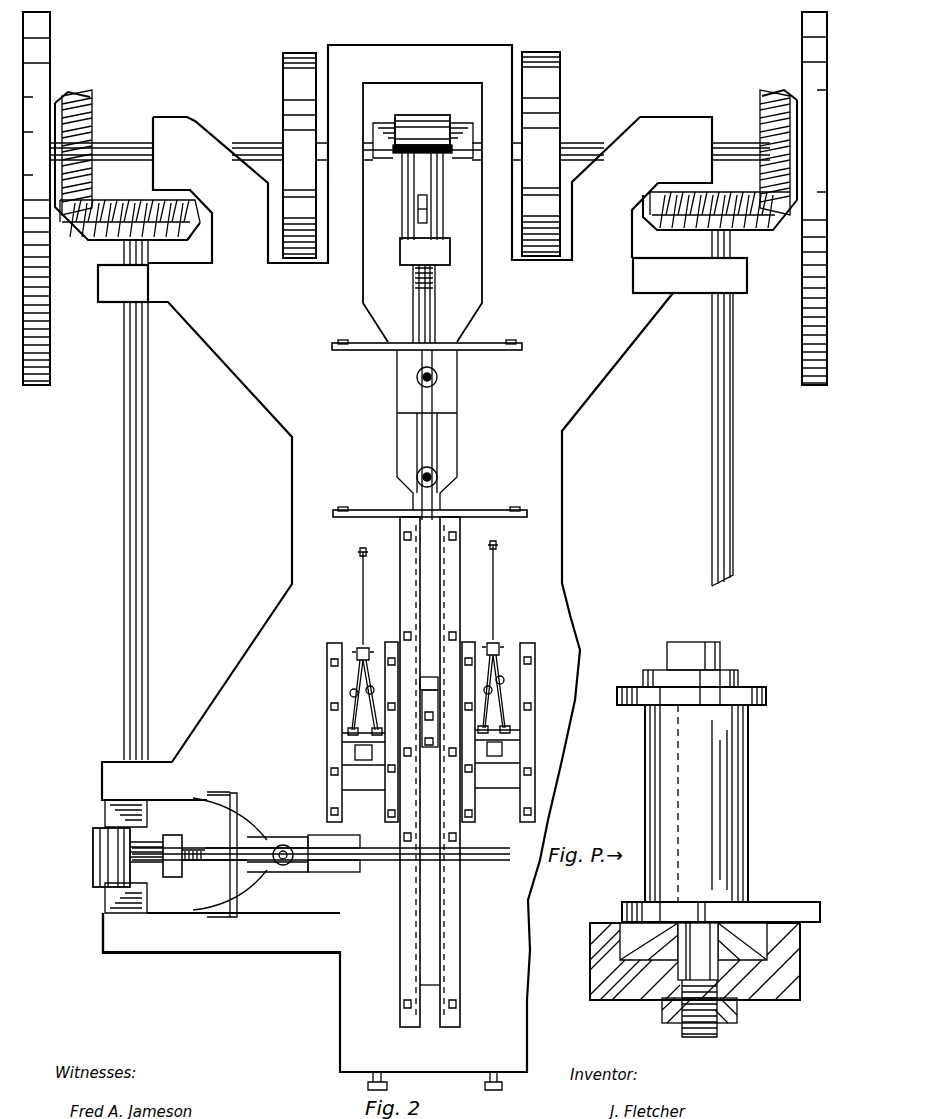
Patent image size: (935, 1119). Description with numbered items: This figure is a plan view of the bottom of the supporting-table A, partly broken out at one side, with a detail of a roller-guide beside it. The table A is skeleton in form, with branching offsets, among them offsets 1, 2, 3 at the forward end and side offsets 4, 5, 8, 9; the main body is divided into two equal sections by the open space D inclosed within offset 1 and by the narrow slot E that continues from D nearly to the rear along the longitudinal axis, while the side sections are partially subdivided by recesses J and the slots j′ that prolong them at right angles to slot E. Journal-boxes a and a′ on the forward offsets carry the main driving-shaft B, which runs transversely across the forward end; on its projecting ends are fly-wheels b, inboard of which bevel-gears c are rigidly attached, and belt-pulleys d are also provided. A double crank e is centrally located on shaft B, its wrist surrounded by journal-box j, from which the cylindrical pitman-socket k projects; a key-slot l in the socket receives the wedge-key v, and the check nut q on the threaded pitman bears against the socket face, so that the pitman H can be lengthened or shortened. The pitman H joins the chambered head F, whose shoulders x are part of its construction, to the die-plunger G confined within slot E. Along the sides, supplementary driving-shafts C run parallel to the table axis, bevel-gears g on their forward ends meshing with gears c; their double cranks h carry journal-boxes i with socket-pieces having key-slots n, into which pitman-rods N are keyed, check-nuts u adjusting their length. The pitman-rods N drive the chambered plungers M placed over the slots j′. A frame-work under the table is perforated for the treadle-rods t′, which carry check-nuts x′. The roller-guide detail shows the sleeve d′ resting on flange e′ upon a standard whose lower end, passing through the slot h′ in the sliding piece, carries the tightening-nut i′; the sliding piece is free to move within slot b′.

In FIG. 2, the supporting-table A is at (405, 558).
In FIG. 2, the offset 1 is at (420, 152).
In FIG. 2, the offset 2 is at (672, 183).
In FIG. 2, the offset 3 is at (184, 153).
In FIG. 2, the offset 4 is at (690, 275).
In FIG. 2, the offset 5 is at (123, 283).
In FIG. 2, the offset 8 is at (154, 781).
In FIG. 2, the offset 9 is at (221, 933).
In FIG. 2, the fly-wheel b is at (425, 198).
In FIG. 2, the main driving-shaft B is at (410, 144).
In FIG. 2, the belt-pulley d is at (421, 155).
In FIG. 2, the double crank e is at (423, 132).
In FIG. 2, the bevel-gear g is at (426, 169).
In FIG. 2, the supplementary driving-shaft C is at (438, 495).
In FIG. 2, the open space D is at (422, 212).
In FIG. 2, the journal-box j is at (422, 118).
In FIG. 2, the pitman-rod socket k is at (422, 196).
In FIG. 2, the key-slot l is at (430, 209).
In FIG. 2, the wedge-key v is at (418, 209).
In FIG. 2, the check nut q is at (425, 251).
In FIG. 2, the pitman H is at (432, 304).
In FIG. 2, the chambered head F is at (427, 430).
In FIG. 2, the die-plunger G is at (433, 435).
In FIG. 2, the slot E is at (430, 772).
In FIG. 2, the journal-box a is at (381, 722).
In FIG. 2, the shoulder x is at (432, 779).
In FIG. 2, the slot b′ is at (431, 760).
In FIG. P, the slot b′ is at (721, 904).
In FIG. 2, the tightening-nut i′ is at (428, 750).
In FIG. P, the tightening-nut i′ is at (720, 1030).
In FIG. 2, the lever rod m′ is at (438, 593).
In FIG. 2, the forked lever k′ is at (431, 680).
In FIG. 2, the longitudinal slot h′ is at (505, 748).
In FIG. 2, the double crank h is at (132, 856).
In FIG. 2, the journal-box i is at (107, 857).
In FIG. 2, the key-slot n is at (93, 900).
In FIG. 2, the check-nut u is at (167, 856).
In FIG. 2, the recess J is at (173, 885).
In FIG. 2, the pitman-rod N is at (230, 854).
In FIG. 2, the chambered plunger M is at (257, 920).
In FIG. 2, the check-nut x′ is at (283, 915).
In FIG. 2, the slot j′ is at (321, 864).
In FIG. 2, the treadle-rod t′ is at (433, 840).
In FIG. P, the sleeve d′ is at (696, 803).
In FIG. P, the journal-box a′ is at (694, 687).
In FIG. P, the flange e′ is at (693, 656).
In FIG. P, the bevel-gear c is at (693, 941).